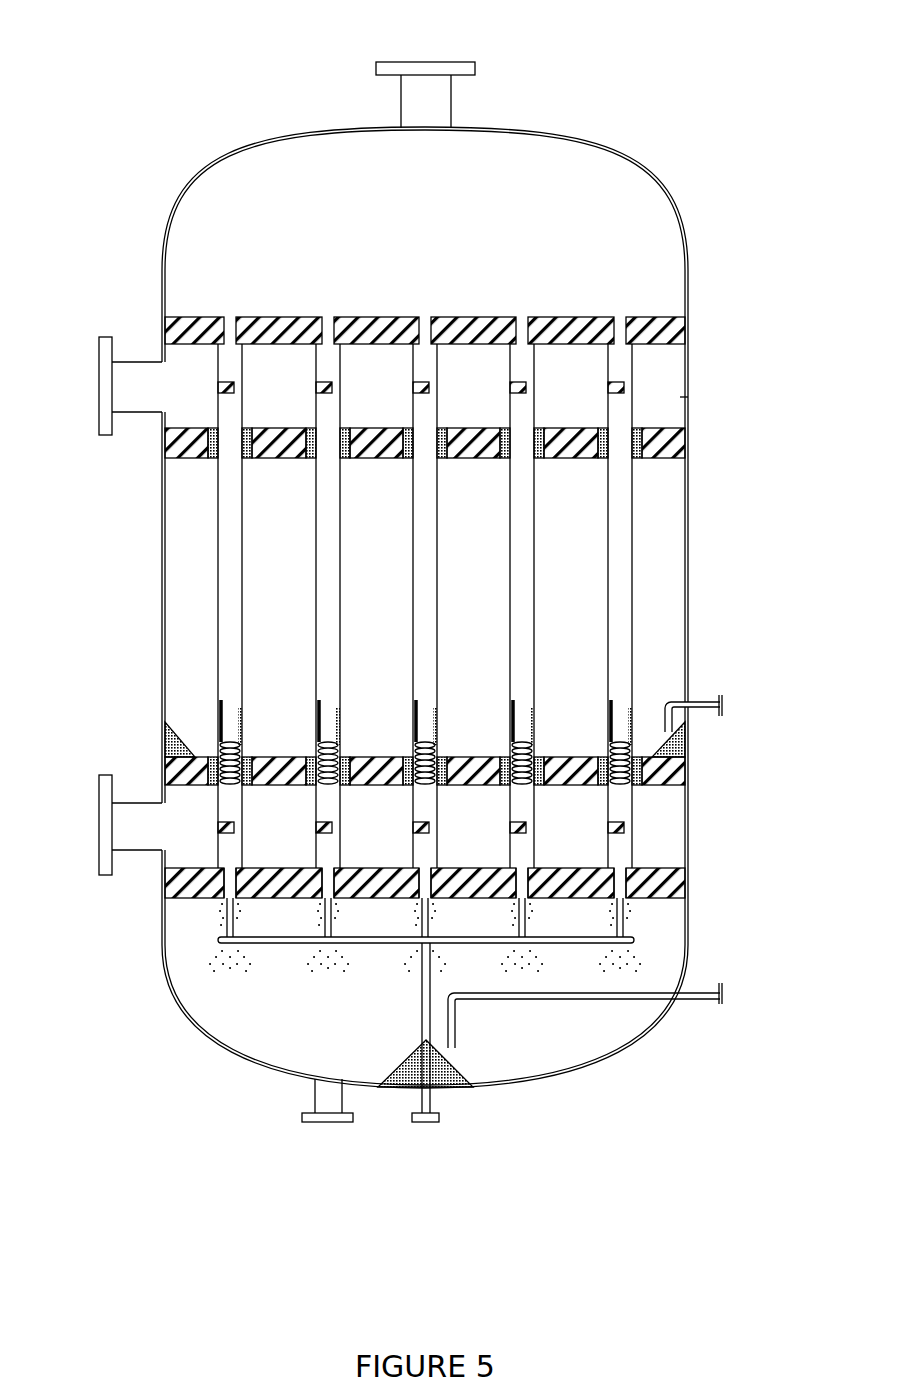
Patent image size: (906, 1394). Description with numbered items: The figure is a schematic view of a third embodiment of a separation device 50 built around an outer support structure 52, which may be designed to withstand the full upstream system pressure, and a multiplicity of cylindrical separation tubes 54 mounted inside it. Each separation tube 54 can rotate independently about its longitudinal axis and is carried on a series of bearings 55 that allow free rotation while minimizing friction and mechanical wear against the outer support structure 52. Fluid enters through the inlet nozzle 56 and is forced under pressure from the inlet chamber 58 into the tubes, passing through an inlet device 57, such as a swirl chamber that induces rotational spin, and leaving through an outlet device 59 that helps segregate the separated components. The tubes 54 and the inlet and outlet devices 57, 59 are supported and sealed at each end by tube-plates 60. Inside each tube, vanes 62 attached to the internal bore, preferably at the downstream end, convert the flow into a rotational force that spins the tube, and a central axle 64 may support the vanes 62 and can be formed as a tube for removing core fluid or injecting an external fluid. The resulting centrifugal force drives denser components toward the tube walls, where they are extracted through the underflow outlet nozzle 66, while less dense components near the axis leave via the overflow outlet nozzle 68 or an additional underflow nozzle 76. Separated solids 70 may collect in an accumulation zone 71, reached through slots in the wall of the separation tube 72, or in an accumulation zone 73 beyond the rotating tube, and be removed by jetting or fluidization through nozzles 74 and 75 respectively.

The separation device 50 is at (460, 601).
The outer support structure 52 is at (690, 556).
The separation tubes 54 is at (657, 552).
The bearings 55 is at (664, 815).
The inlet nozzle 56 is at (99, 381).
The inlet device 57 is at (660, 360).
The inlet chamber 58 is at (682, 397).
The outlet device 59 is at (661, 851).
The tube-plate 60 is at (167, 330).
The vanes 62 is at (610, 742).
The central axle 64 is at (645, 920).
The underflow outlet nozzle 66 is at (99, 818).
The overflow outlet nozzle 68 is at (430, 62).
The separated solids 70 is at (611, 700).
The accumulation zone 71 is at (700, 742).
The slots in the wall of the separation tube 72 is at (608, 738).
The accumulation zone 73 is at (457, 1062).
The nozzle 74 is at (726, 706).
The nozzle 75 is at (726, 994).
The additional underflow nozzle 76 is at (443, 1118).